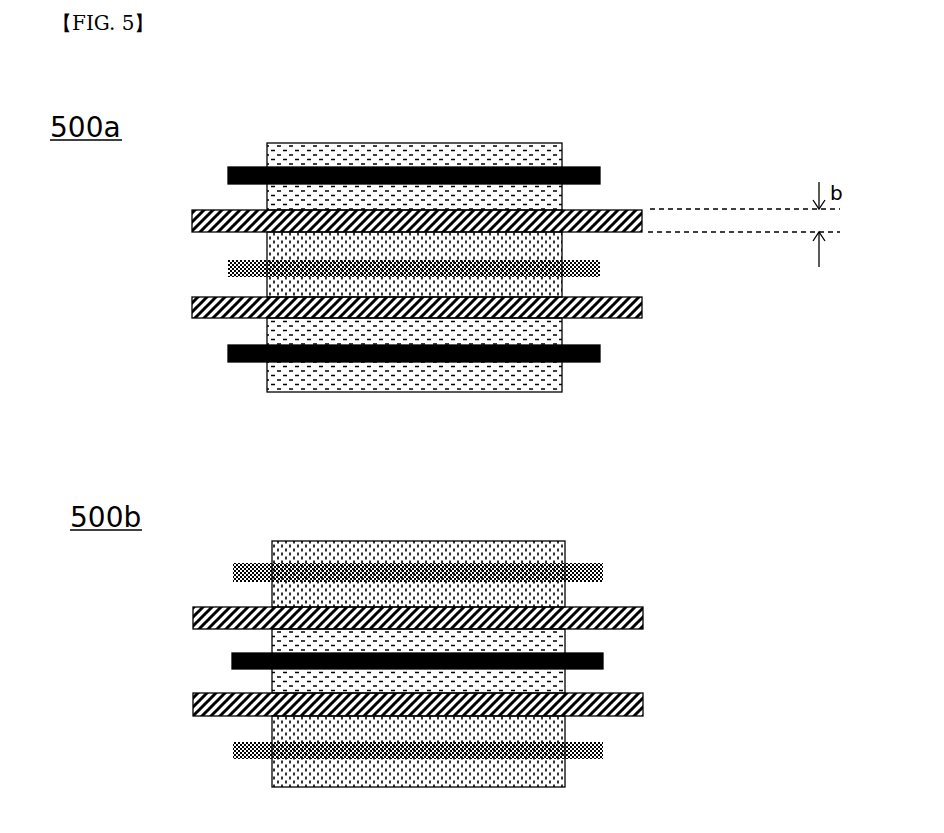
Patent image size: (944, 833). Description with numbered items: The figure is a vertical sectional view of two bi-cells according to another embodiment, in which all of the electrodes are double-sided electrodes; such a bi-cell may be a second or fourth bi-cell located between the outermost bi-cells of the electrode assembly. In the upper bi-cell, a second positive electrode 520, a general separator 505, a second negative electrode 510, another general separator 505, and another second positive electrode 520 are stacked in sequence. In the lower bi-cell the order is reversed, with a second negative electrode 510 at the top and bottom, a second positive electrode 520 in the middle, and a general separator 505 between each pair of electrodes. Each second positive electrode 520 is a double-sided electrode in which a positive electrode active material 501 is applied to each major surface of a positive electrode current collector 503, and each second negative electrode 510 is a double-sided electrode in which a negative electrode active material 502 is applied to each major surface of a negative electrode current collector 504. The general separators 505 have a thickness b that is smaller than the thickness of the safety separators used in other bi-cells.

The positive electrode active material 501 is at (562, 146).
The negative electrode active material 502 is at (267, 247).
The positive electrode current collector 503 is at (600, 176).
The negative electrode current collector 504 is at (228, 268).
The general separator 505 is at (642, 222).
The second negative electrode 510 is at (126, 325).
The second positive electrode 520 is at (740, 130).